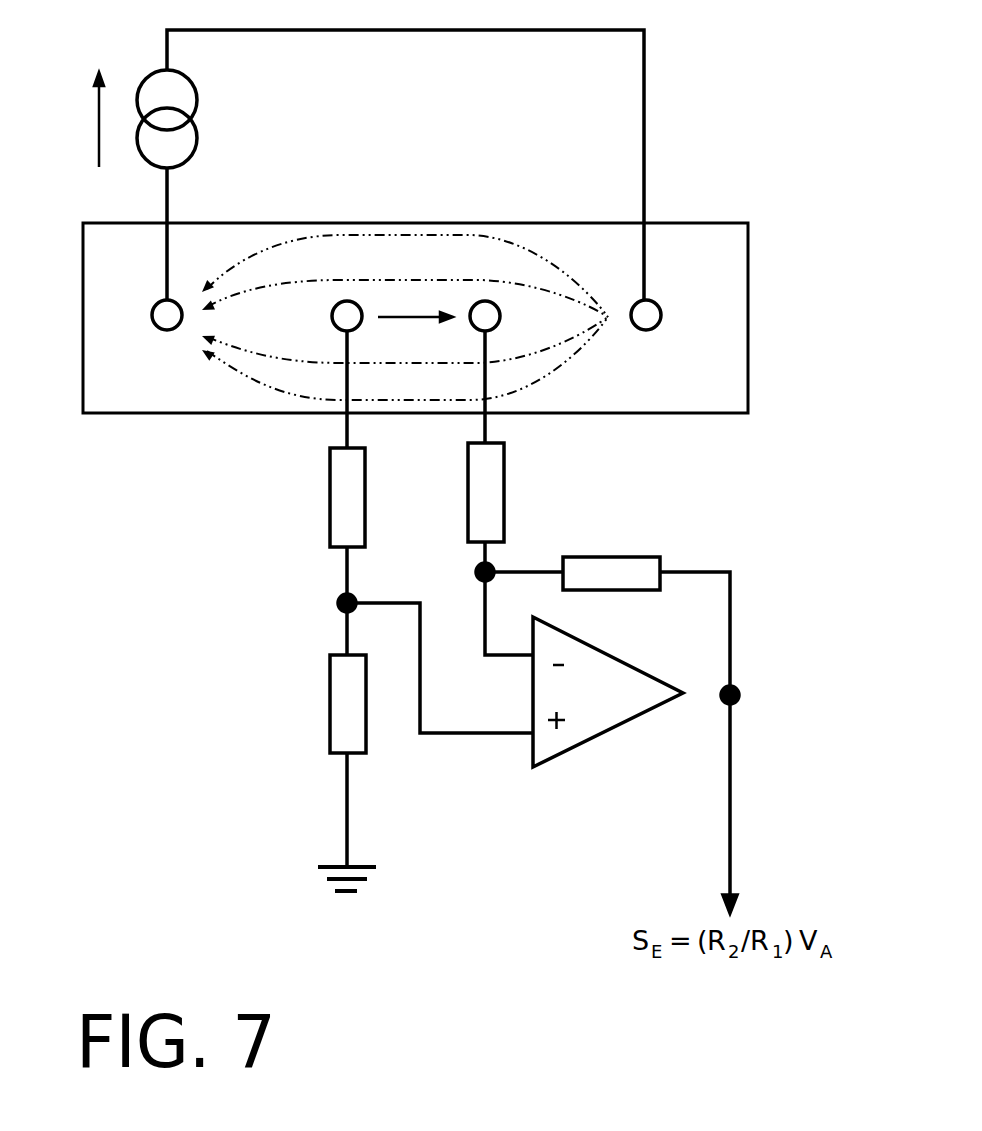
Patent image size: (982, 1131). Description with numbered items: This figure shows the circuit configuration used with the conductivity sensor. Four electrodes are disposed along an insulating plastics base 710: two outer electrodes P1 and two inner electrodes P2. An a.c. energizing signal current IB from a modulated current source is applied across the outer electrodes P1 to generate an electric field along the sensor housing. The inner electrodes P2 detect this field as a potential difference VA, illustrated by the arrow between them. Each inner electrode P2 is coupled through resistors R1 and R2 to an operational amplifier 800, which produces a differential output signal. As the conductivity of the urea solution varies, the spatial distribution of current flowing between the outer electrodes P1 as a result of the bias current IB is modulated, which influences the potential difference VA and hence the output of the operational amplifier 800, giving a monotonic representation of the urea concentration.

The base 710 is at (415, 318).
The operational amplifier 800 is at (602, 698).
The outer electrodes P1 is at (403, 318).
The inner electrodes P2 is at (410, 319).
The resistors R1 is at (412, 495).
The resistors R2 is at (473, 655).
The a.c. energizing signal current IB is at (81, 119).
The potential difference VA is at (415, 335).